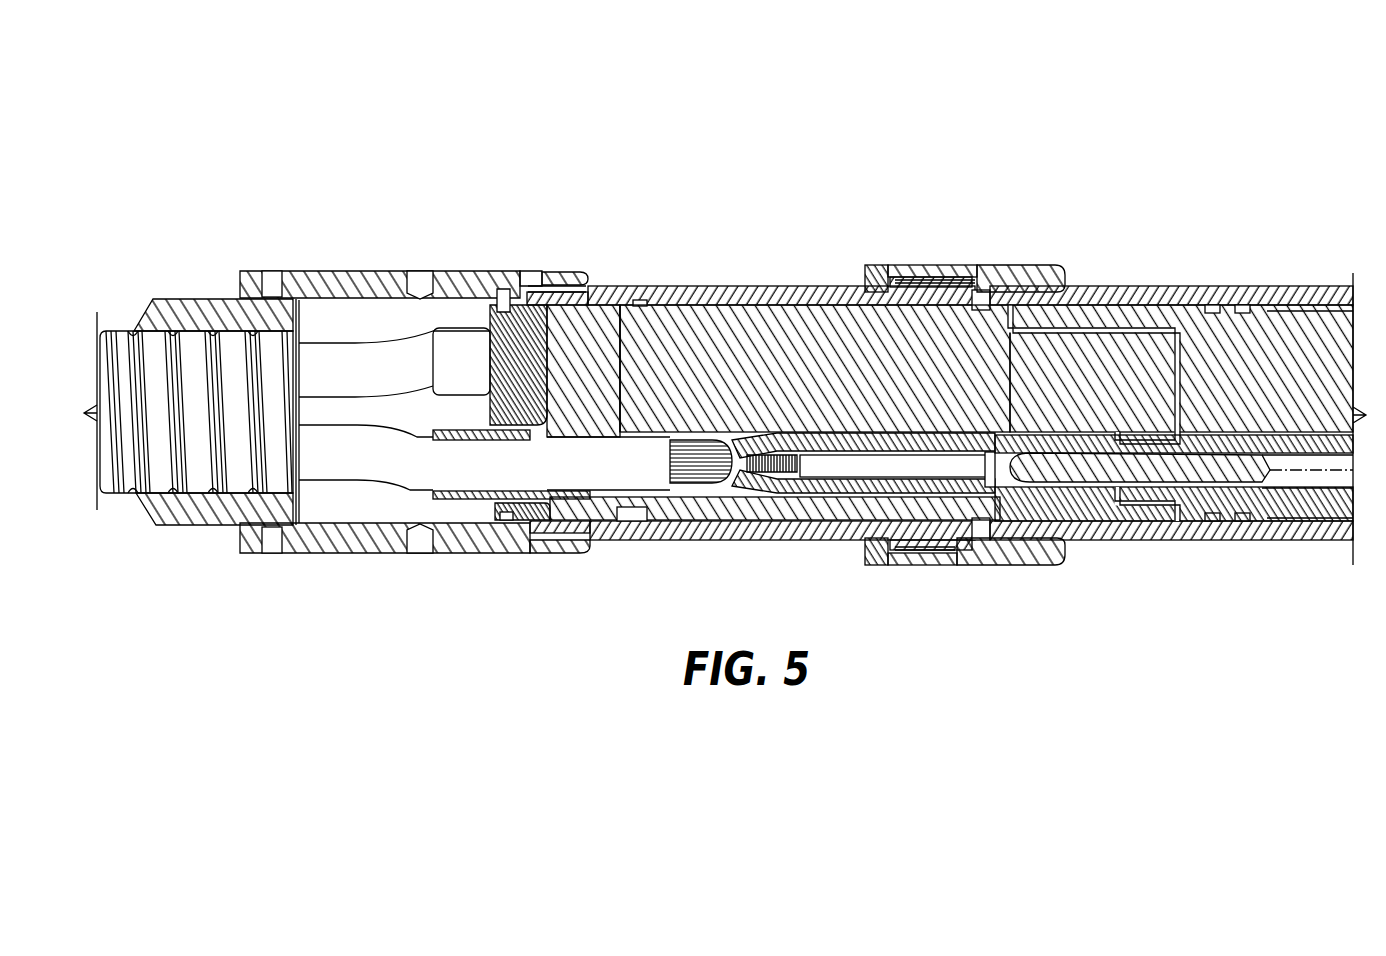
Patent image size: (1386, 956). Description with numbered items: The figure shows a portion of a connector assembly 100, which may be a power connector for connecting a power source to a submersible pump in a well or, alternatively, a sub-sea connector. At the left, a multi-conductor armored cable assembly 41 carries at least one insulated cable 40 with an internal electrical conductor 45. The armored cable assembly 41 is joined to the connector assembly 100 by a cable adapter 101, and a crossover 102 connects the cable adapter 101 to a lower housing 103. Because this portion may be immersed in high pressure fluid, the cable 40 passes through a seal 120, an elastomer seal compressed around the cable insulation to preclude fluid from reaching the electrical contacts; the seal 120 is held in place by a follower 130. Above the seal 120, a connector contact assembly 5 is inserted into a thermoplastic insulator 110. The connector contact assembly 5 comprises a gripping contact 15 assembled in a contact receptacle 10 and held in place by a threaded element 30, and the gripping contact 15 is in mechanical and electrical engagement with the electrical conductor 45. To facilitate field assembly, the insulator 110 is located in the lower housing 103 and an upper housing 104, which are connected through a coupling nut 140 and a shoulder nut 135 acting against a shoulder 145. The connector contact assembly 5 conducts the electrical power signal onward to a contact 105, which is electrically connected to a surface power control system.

The connector assembly 100 is at (737, 150).
The multi-conductor armored cable assembly 41 is at (110, 312).
The cable adapter 101 is at (178, 299).
The insulated cable 40 is at (310, 338).
The crossover 102 is at (350, 270).
The follower 130 is at (502, 304).
The seal 120 is at (597, 318).
The lower housing 103 is at (659, 296).
The insulator 110 is at (713, 318).
The upper housing 104 is at (1141, 294).
The shoulder nut 135 is at (872, 262).
The shoulder 145 is at (975, 278).
The coupling nut 140 is at (1032, 264).
The electrical conductor 45 is at (693, 484).
The gripping contact 15 is at (740, 497).
The contact receptacle 10 is at (803, 512).
The connector contact assembly 5 is at (835, 498).
The threaded element 30 is at (992, 488).
The contact 105 is at (1077, 478).